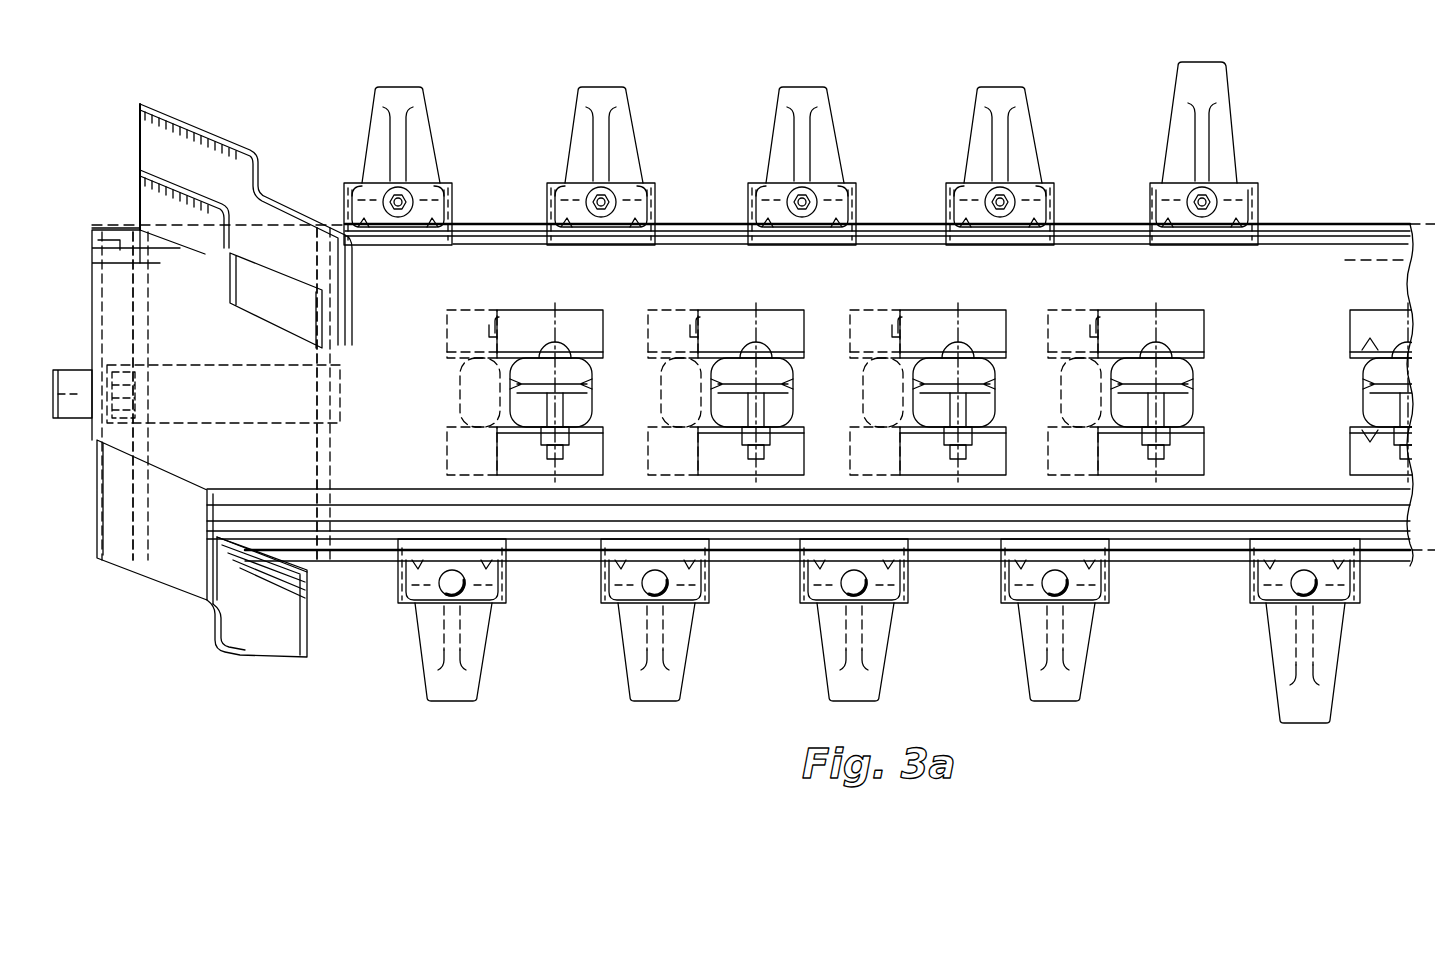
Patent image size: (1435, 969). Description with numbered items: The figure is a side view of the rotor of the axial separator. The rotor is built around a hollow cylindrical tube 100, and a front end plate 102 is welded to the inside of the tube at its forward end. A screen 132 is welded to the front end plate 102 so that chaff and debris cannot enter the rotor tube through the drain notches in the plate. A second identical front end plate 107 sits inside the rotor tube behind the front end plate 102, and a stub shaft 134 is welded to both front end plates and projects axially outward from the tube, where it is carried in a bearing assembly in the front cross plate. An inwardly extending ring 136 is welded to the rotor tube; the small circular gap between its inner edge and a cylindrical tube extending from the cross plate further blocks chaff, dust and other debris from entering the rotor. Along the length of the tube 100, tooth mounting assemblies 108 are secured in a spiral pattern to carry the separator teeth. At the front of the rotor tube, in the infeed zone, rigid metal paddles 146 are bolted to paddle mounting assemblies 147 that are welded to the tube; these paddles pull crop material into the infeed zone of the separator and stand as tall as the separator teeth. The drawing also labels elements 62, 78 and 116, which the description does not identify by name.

The upper mounting bracket 62 is at (636, 120).
The end mounting bracket 78 is at (1210, 76).
The hollow cylindrical tube 100 is at (1292, 326).
The front end plate 102 is at (150, 428).
The second identical front end plate 107 is at (318, 458).
The tooth mounting assemblies 108 is at (930, 174).
The lower mounting bracket 116 is at (455, 690).
The screen 132 is at (118, 228).
The stub shaft 134 is at (220, 352).
The inwardly extending ring 136 is at (92, 245).
The rigid metal paddles 146 is at (220, 152).
The paddle mounting assemblies 147 is at (275, 305).